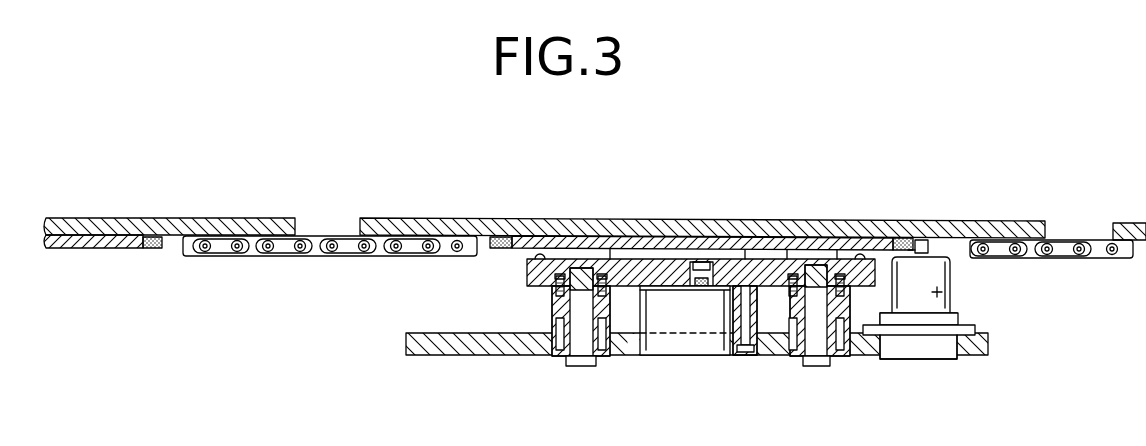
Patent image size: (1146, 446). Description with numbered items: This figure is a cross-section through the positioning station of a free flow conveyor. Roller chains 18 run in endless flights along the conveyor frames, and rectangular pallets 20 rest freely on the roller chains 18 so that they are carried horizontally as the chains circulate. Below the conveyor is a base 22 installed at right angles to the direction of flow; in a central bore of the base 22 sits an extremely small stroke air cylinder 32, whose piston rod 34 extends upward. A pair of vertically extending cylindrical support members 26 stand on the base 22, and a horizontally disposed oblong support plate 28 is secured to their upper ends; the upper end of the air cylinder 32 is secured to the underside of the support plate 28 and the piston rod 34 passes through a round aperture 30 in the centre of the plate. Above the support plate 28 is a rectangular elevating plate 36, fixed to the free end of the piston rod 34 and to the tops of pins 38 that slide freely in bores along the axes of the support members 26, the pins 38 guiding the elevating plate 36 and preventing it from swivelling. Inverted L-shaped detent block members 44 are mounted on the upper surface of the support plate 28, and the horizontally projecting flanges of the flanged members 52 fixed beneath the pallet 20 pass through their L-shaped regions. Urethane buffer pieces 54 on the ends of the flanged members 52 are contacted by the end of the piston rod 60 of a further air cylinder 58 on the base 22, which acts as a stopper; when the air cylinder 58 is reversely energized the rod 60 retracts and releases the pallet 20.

The roller chains 18 is at (325, 236).
The rectangular pallets 20 is at (251, 218).
The base piece 22 is at (481, 356).
The cylindrical support members 26 is at (552, 312).
The support plate 28 is at (525, 278).
The round aperture 30 is at (740, 262).
The air cylinder 32 is at (687, 345).
The piston rod 34 is at (703, 282).
The elevating plate 36 is at (635, 262).
The pins 38 is at (578, 366).
The detent block members 44 is at (775, 252).
The flanged members 52 is at (541, 237).
The buffer pieces 54 is at (490, 250).
The air cylinder 58 is at (950, 292).
The piston rod 60 is at (930, 247).